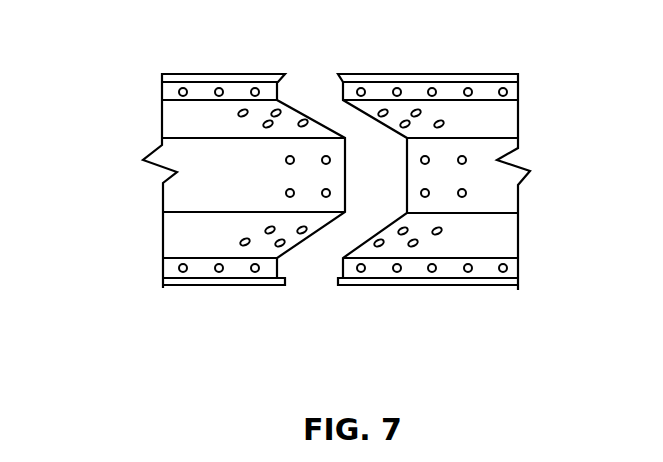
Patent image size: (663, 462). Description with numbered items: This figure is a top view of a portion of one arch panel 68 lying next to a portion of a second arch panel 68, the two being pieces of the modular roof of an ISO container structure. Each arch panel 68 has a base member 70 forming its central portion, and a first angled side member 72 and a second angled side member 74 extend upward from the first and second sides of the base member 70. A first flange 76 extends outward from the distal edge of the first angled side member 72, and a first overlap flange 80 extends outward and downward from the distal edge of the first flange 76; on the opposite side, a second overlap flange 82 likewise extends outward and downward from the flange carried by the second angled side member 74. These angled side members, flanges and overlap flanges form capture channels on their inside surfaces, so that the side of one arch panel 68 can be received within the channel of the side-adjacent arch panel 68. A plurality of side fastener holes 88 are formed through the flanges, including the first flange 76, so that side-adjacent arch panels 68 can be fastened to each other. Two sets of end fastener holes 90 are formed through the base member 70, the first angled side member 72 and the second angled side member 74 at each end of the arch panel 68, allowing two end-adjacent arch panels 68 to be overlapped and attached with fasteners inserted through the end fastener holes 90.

The arch panel 68 is at (538, 96).
The base member 70 is at (208, 189).
The first angled side member 72 is at (178, 241).
The second angled side member 74 is at (183, 118).
The first flange 76 is at (488, 270).
The first overlap flange 80 is at (415, 288).
The second overlap flange 82 is at (430, 78).
The side fastener holes 88 is at (394, 86).
The end fastener holes 90 is at (304, 120).